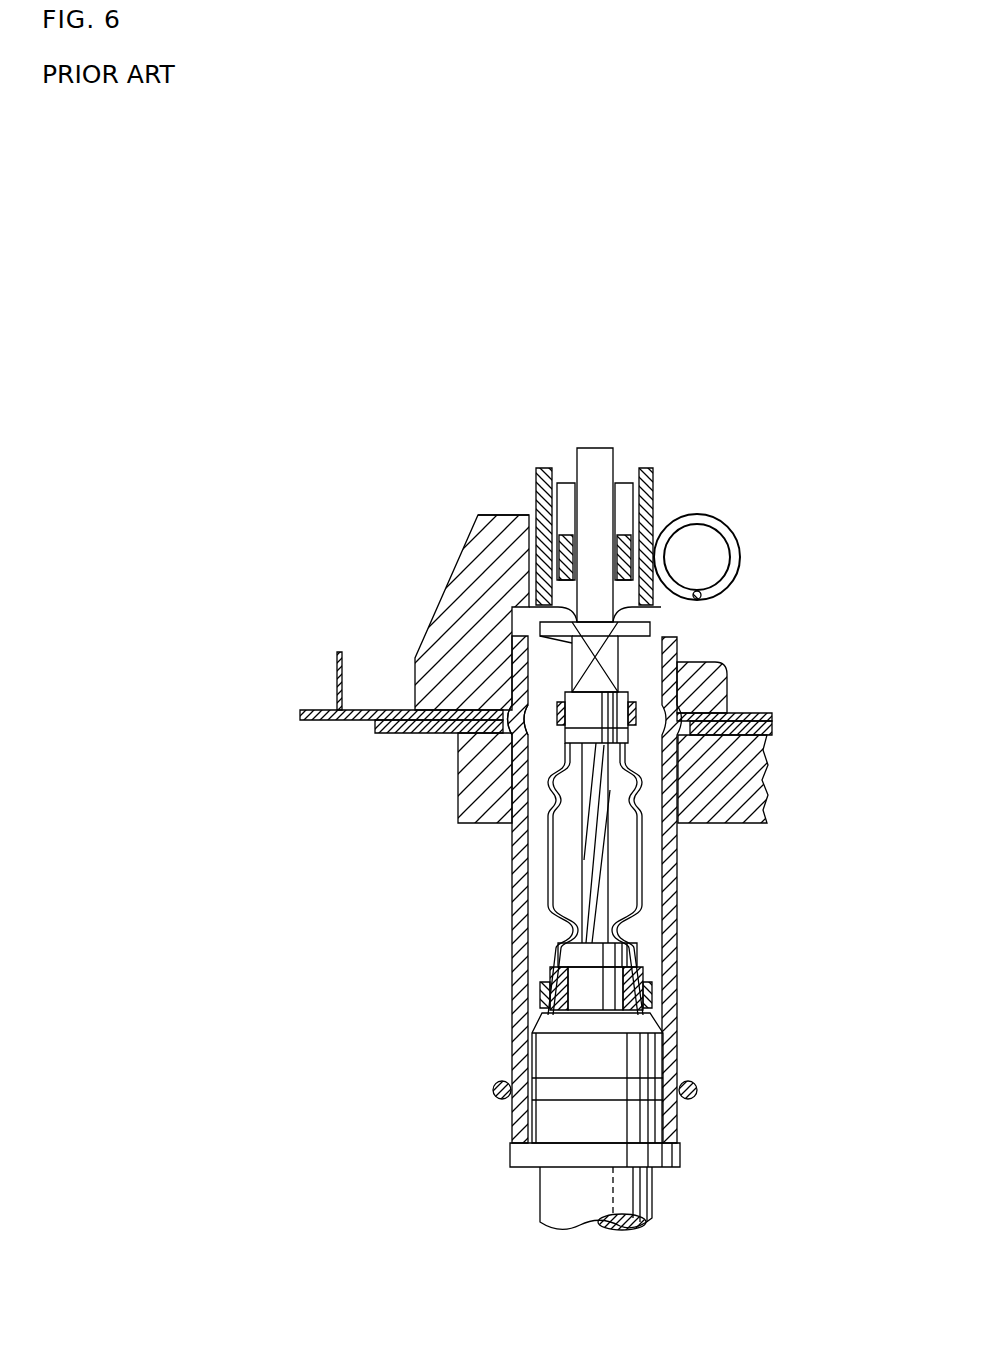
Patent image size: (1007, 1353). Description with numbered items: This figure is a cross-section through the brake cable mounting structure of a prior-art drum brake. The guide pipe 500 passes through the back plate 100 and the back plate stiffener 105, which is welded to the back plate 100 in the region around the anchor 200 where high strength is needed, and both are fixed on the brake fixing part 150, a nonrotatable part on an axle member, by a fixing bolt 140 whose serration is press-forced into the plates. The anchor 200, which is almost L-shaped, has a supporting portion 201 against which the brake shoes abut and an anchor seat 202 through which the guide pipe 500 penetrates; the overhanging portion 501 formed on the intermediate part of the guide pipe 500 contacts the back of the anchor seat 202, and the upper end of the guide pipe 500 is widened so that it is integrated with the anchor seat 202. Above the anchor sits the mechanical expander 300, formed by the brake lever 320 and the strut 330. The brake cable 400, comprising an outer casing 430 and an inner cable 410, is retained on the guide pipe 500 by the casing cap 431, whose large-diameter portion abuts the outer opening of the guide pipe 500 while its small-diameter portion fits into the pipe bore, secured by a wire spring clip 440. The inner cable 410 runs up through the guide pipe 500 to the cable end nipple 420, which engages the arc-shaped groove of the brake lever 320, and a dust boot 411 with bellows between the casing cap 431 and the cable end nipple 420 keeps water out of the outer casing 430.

The back plate 100 is at (772, 715).
The back plate stiffener 105 is at (772, 728).
The fixing bolt 140 is at (662, 623).
The brake fixing part 150 is at (755, 826).
The anchor 200 is at (442, 565).
The supporting portion 201 is at (477, 514).
The anchor seat 202 is at (729, 700).
The mechanical expander 300 is at (544, 464).
The brake lever 320 is at (628, 545).
The strut 330 is at (650, 466).
The brake cable 400 is at (663, 1197).
The inner cable 410 is at (580, 823).
The dust boot 411 is at (546, 908).
The cable end nipple 420 is at (598, 447).
The outer casing 430 is at (560, 1200).
The casing cap 431 is at (548, 1127).
The wire spring clip 440 is at (698, 1093).
The guide pipe 500 is at (688, 1049).
The overhanging portion 501 is at (507, 740).